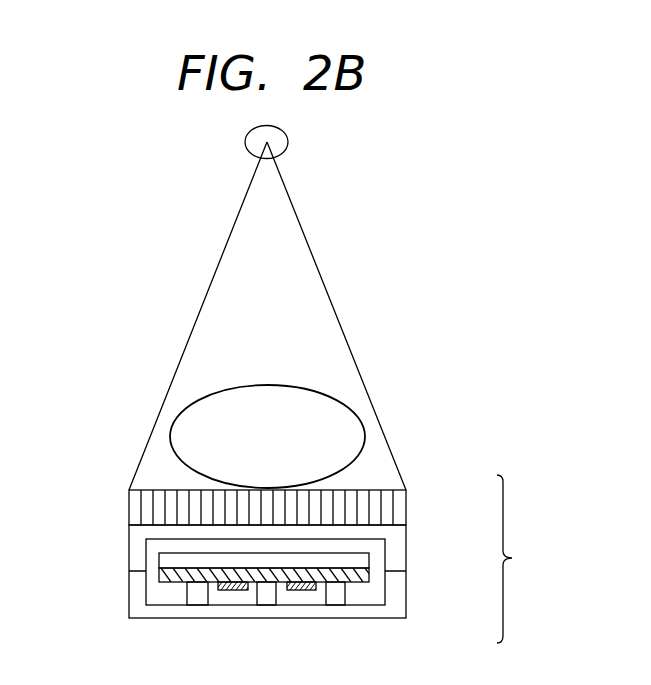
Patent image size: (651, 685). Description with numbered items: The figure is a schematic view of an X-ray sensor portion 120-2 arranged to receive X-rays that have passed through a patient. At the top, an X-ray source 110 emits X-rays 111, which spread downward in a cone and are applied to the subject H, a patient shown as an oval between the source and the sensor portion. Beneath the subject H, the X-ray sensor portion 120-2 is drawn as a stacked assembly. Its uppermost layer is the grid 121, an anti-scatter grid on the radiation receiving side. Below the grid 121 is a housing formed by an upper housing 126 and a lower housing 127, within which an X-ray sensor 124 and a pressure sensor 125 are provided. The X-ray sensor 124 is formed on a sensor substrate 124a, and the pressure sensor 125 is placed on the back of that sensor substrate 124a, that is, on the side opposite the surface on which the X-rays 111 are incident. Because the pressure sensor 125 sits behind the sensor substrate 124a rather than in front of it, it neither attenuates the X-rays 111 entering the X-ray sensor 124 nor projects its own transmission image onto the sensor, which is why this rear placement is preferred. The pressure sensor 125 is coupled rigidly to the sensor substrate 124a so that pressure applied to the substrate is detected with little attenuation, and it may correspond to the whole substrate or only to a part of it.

The X-ray source 110 is at (286, 142).
The X-rays 111 is at (328, 292).
The subject H is at (347, 410).
The grid 121 is at (400, 511).
The X-ray sensor 124 is at (367, 559).
The sensor substrate 124a is at (367, 580).
The pressure sensor 125 is at (310, 590).
The upper housing 126 is at (130, 553).
The lower housing 127 is at (130, 600).
The X-ray sensor portion 120-2 is at (537, 559).